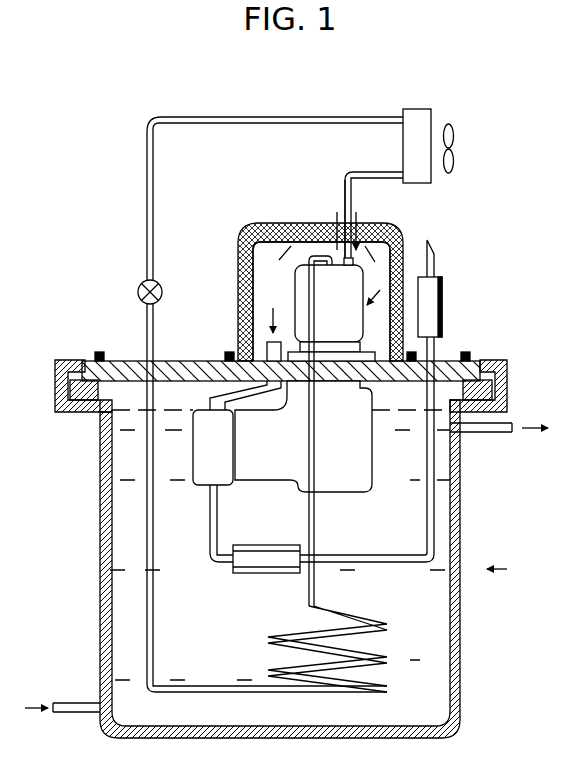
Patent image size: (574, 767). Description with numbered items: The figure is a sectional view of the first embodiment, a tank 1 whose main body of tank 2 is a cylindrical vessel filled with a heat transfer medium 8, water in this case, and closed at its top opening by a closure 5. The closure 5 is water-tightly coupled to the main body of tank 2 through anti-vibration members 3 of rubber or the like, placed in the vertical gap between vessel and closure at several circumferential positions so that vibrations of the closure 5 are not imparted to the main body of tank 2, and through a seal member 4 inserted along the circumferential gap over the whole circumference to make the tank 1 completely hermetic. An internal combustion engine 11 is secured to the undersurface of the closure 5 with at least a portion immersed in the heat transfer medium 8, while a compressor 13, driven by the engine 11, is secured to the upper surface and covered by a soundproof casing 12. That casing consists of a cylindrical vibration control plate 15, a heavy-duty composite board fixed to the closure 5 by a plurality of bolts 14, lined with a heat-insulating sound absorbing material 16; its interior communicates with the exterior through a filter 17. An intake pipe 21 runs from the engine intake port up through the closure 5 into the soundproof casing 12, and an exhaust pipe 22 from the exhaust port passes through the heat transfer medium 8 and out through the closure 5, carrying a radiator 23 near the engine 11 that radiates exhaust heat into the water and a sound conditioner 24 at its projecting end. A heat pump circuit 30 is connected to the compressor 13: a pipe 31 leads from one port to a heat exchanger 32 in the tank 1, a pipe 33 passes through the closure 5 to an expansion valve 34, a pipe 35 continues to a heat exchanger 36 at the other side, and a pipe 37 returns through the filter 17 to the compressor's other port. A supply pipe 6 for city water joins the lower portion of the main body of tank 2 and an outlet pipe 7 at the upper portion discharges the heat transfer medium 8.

The tank 1 is at (505, 570).
The main body of tank 2 is at (462, 636).
The anti-vibration members 3 is at (68, 398).
The seal member 4 is at (55, 368).
The closure 5 is at (452, 360).
The supply pipe 6 is at (68, 703).
The outlet pipe 7 is at (495, 435).
The heat transfer medium 8 is at (455, 702).
The internal combustion engine 11 is at (366, 487).
The soundproof casing 12 is at (280, 292).
The compressor 13 is at (297, 297).
The bolts 14 is at (227, 352).
The vibration control plate 15 is at (238, 237).
The sound absorbing material 16 is at (251, 258).
The filter 17 is at (354, 226).
The intake pipe 21 is at (252, 392).
The exhaust pipe 22 is at (386, 566).
The radiator 23 is at (272, 575).
The sound conditioner 24 is at (443, 297).
The heat pump circuit 30 is at (275, 382).
The pipe 31 is at (316, 528).
The heat exchanger 32 is at (388, 660).
The pipe 33 is at (154, 641).
The expansion valve 34 is at (138, 292).
The pipe 35 is at (213, 125).
The heat exchanger 36 is at (418, 109).
The pipe 37 is at (345, 186).